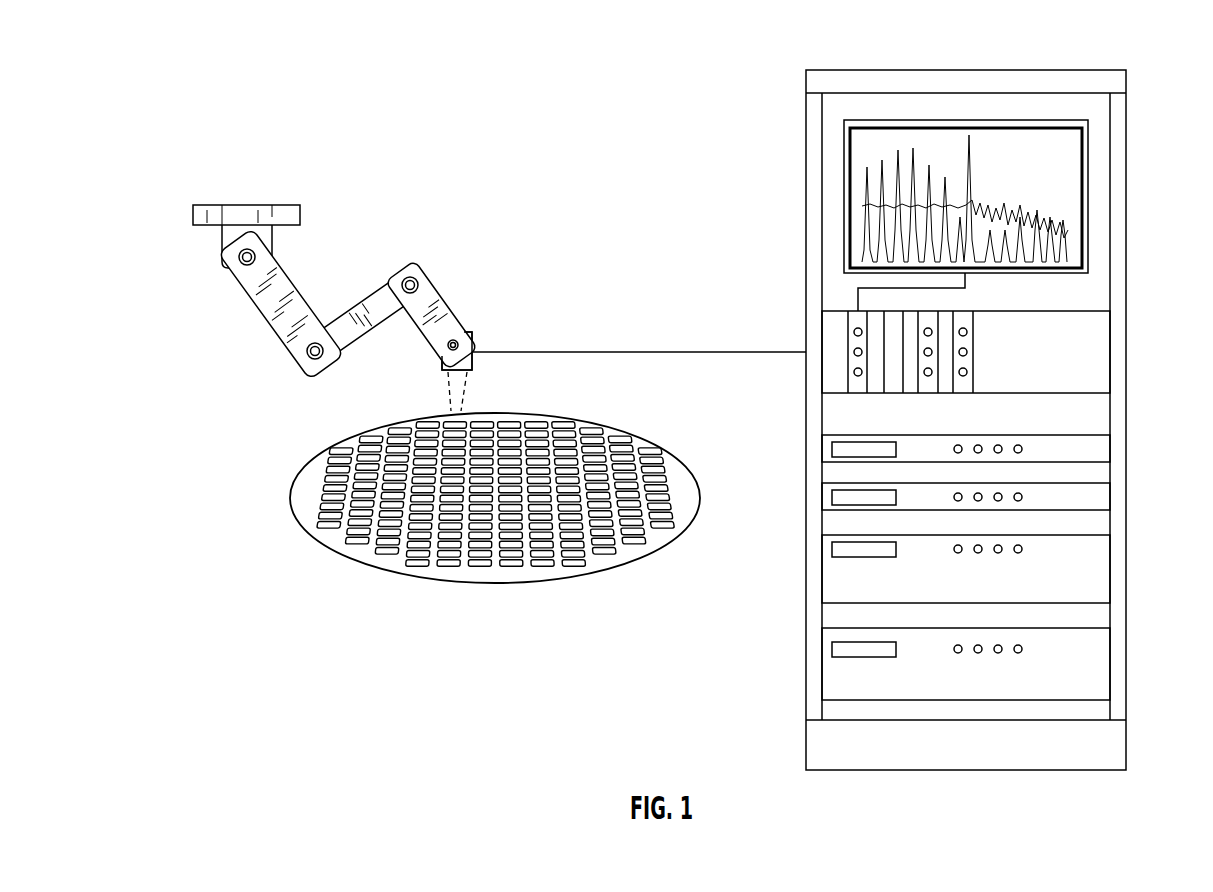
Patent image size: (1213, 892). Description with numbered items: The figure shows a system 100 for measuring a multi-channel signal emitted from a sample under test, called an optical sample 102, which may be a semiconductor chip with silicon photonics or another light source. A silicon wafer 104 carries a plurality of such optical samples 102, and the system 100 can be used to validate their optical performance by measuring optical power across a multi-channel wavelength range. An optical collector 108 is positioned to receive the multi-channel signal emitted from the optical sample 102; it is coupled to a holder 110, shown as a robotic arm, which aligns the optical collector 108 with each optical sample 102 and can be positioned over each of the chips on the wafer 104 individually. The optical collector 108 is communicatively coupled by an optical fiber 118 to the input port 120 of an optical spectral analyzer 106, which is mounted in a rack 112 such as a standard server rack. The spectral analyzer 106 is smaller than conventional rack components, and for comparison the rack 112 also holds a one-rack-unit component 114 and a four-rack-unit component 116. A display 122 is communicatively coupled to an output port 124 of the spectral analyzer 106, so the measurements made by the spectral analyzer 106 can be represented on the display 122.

The system 100 is at (171, 96).
The optical sample 102 is at (451, 475).
The silicon wafer 104 is at (497, 585).
The optical spectral analyzer 106 is at (845, 377).
The optical collector 108 is at (473, 360).
The holder 110 is at (432, 297).
The rack 112 is at (806, 85).
The 1U component 114 is at (1104, 452).
The 4U component 116 is at (1104, 560).
The optical fiber 118 is at (622, 351).
The input port 120 is at (855, 350).
The display 122 is at (843, 168).
The output port 124 is at (856, 329).